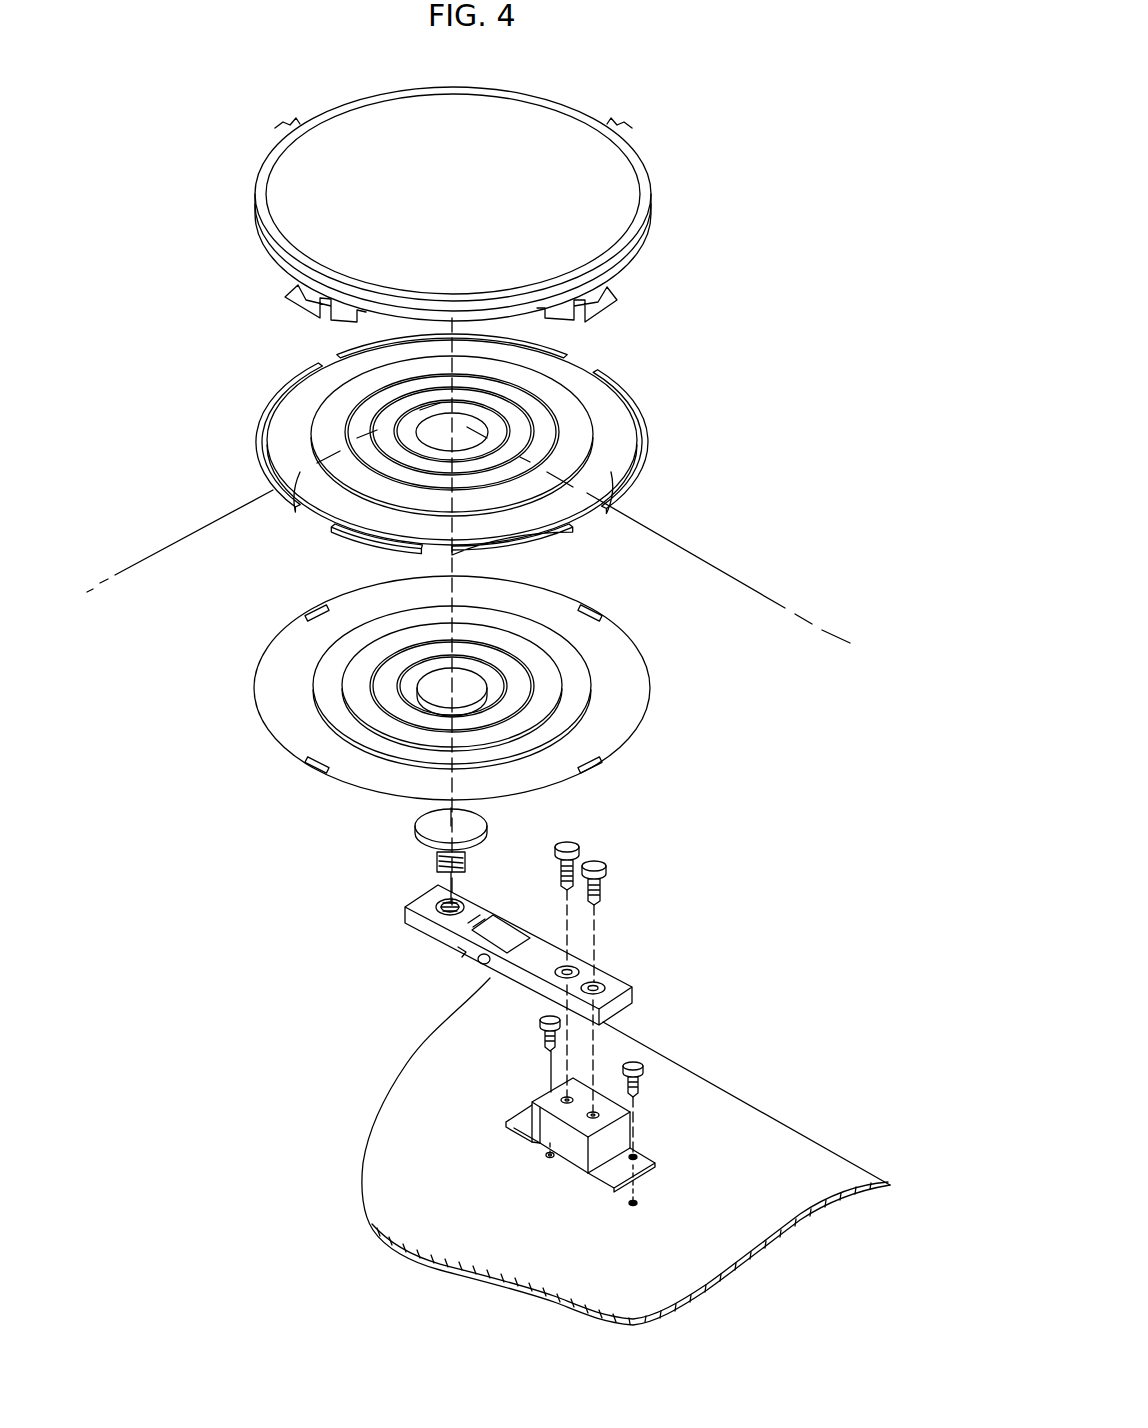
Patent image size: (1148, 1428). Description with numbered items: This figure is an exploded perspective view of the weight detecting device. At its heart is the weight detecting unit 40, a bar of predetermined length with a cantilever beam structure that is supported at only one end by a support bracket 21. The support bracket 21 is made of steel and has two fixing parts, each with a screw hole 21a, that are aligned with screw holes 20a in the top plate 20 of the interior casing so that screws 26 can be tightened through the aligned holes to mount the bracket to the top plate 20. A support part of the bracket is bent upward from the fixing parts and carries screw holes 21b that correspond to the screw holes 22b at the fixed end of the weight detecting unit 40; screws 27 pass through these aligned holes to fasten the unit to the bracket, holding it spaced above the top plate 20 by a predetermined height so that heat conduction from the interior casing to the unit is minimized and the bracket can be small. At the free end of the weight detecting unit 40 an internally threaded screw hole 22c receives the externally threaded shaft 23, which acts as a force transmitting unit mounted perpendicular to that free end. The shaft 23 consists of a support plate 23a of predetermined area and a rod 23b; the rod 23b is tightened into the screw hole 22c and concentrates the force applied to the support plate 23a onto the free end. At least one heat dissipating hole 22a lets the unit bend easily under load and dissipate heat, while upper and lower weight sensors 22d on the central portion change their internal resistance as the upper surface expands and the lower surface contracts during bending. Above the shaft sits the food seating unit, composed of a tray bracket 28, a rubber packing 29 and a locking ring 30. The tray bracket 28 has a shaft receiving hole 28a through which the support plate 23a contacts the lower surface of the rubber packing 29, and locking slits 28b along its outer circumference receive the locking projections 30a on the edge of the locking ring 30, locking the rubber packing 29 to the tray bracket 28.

The top plate 20 is at (810, 1150).
The screw holes 20a is at (637, 1203).
The support bracket 21 is at (654, 1120).
The screw hole 21a is at (636, 1160).
The screw holes 21b is at (566, 1098).
The heat dissipating hole 22a is at (462, 950).
The screw holes 22b is at (600, 988).
The screw hole 22c is at (445, 905).
The weight sensors 22d is at (484, 962).
The shaft 23 is at (458, 854).
The support plate 23a is at (478, 826).
The rod 23b is at (468, 862).
The screws 26 is at (640, 1062).
The screws 27 is at (594, 864).
The tray bracket 28 is at (634, 662).
The shaft receiving hole 28a is at (480, 686).
The locking slit 28b is at (598, 762).
The rubber packing 29 is at (643, 435).
The locking ring 30 is at (643, 191).
The locking projections 30a is at (617, 296).
The weight detecting unit 40 is at (512, 944).